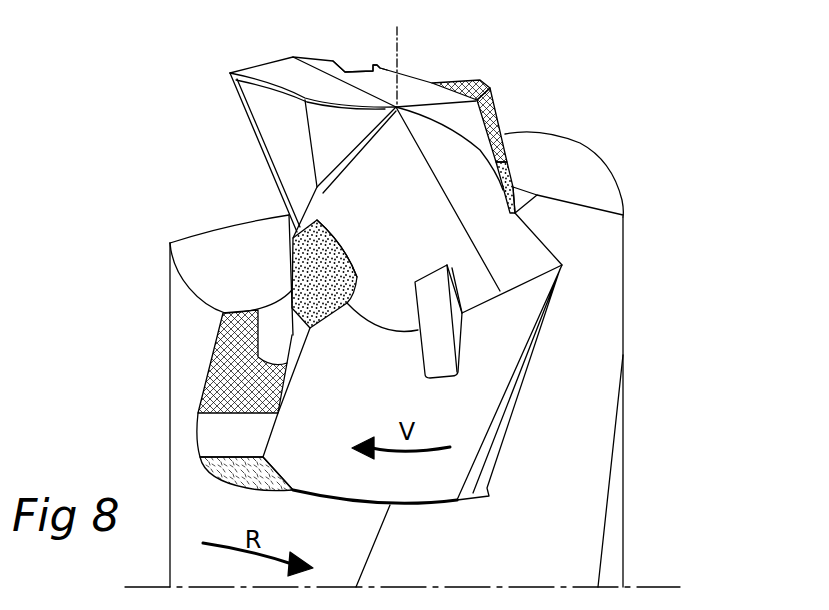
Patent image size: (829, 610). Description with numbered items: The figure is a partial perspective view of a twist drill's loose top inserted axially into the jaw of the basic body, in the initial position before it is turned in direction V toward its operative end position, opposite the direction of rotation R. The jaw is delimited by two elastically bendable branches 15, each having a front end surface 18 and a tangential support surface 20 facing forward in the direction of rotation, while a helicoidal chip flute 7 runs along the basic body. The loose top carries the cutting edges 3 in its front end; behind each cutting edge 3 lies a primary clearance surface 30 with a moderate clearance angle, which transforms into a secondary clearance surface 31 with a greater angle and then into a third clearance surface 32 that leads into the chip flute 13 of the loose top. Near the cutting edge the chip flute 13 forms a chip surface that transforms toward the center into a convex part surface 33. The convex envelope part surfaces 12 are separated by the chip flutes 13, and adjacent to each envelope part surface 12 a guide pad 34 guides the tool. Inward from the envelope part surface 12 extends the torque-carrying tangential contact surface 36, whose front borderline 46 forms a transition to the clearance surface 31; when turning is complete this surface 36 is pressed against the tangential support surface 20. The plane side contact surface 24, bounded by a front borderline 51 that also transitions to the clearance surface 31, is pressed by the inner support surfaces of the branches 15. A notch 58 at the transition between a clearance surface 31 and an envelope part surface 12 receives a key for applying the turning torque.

The cutting edge 3 is at (263, 84).
The chip flute 7 is at (298, 183).
The convex envelope part surface 12 is at (365, 390).
The chip flute 13 is at (263, 130).
The branch 15 is at (165, 266).
The front end surface 18 is at (222, 275).
The tangential support surface 20 is at (223, 396).
The side contact surface 24 is at (308, 286).
The primary clearance surface 30 is at (495, 260).
The secondary clearance surface 31 is at (407, 223).
The third clearance surface 32 is at (330, 188).
The convex part surface 33 is at (317, 141).
The guide pad 34 is at (519, 394).
The tangential contact surface 36 is at (483, 100).
The front borderline 46 is at (469, 80).
The front borderline 51 is at (348, 243).
The notch 58 is at (353, 67).